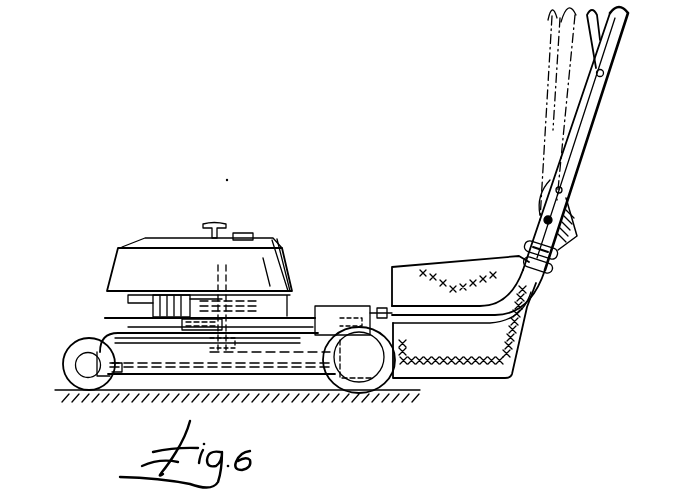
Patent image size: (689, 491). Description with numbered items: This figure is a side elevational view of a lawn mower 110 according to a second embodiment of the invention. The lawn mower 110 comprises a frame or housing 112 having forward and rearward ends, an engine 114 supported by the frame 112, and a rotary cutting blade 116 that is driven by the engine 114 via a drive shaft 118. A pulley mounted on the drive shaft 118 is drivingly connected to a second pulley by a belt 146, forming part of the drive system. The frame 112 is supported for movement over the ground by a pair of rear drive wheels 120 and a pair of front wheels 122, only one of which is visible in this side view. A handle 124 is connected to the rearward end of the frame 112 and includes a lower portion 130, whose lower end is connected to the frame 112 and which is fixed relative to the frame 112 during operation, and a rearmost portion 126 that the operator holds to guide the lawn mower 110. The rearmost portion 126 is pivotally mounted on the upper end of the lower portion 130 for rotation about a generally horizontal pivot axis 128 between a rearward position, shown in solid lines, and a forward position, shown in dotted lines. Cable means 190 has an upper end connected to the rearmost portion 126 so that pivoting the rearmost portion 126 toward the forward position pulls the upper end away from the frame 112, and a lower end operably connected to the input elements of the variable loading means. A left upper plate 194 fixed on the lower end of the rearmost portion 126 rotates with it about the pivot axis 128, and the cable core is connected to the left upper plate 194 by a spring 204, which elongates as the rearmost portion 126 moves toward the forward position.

The lawn mower 110 is at (181, 229).
The frame or housing 112 is at (138, 333).
The engine 114 is at (158, 272).
The rotary cutting blade 116 is at (118, 391).
The drive shaft 118 is at (210, 350).
The rear drive wheels 120 is at (393, 380).
The front wheels 122 is at (115, 337).
The handle 124 is at (597, 111).
The rearmost portion 126 is at (612, 44).
The pivot axis 128 is at (544, 221).
The lower portion 130 is at (456, 322).
The belt 146 is at (301, 312).
The cable means 190 is at (535, 289).
The left upper plate 194 is at (570, 202).
The spring 204 is at (562, 250).